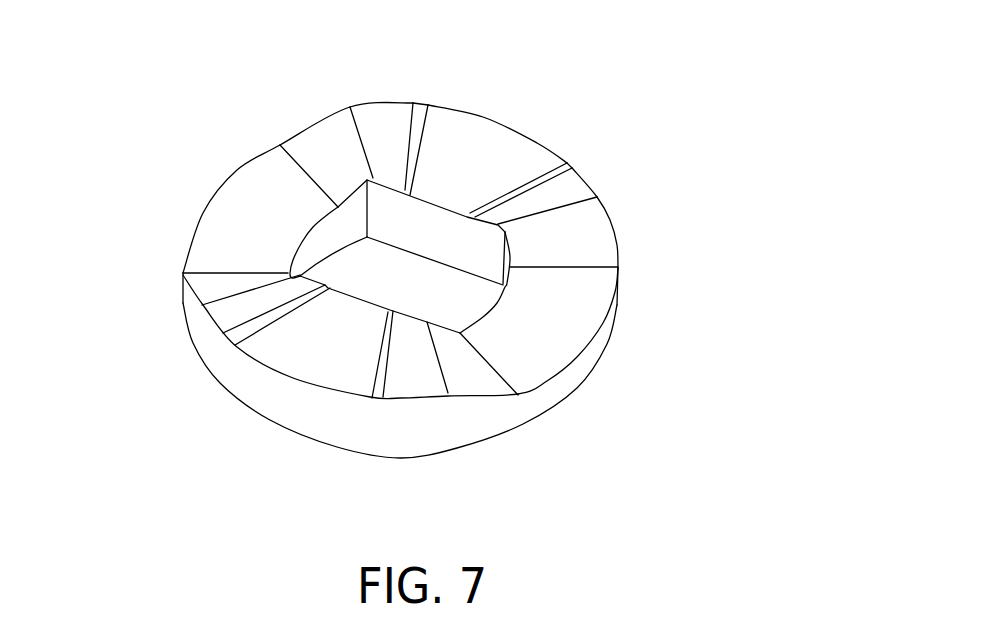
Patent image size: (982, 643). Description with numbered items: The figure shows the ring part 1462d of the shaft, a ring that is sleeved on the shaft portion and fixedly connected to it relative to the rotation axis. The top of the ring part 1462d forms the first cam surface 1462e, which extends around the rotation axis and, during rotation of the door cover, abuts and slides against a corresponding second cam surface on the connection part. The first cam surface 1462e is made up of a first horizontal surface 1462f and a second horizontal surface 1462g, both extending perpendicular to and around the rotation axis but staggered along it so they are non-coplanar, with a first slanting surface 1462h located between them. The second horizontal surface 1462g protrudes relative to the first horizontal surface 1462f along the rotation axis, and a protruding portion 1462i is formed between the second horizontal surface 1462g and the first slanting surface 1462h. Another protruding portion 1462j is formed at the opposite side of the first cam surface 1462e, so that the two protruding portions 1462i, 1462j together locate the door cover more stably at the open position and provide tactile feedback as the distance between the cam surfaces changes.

The ring part 1462d is at (242, 390).
The first cam surface 1462e is at (247, 197).
The first horizontal surface 1462f is at (562, 315).
The second horizontal surface 1462g is at (483, 145).
The first slanting surface 1462h is at (590, 235).
The protruding portion 1462i is at (568, 187).
The another protruding portion 1462j is at (387, 118).